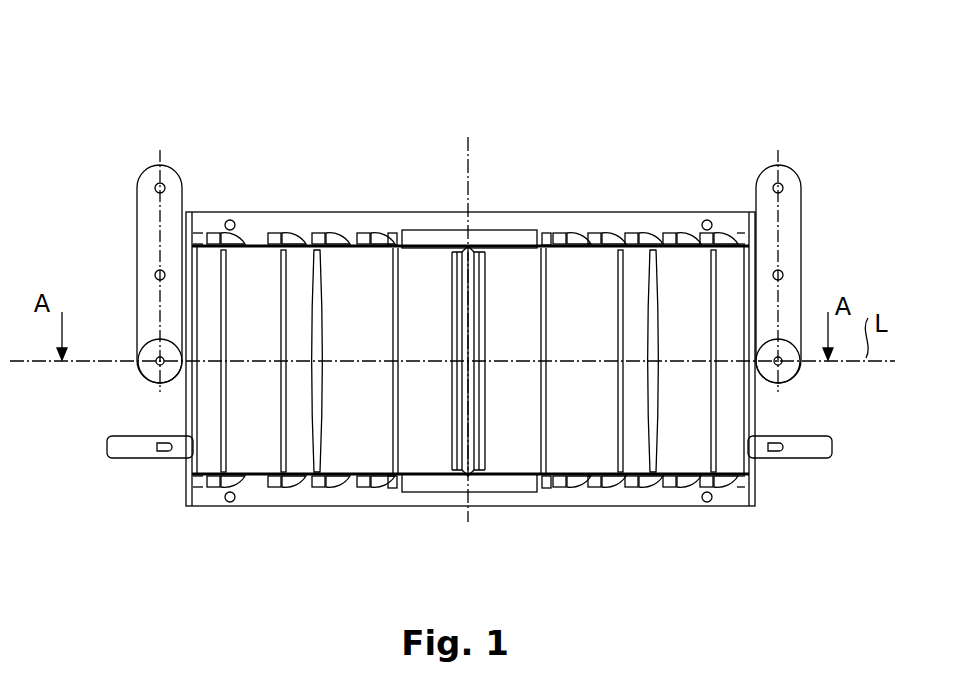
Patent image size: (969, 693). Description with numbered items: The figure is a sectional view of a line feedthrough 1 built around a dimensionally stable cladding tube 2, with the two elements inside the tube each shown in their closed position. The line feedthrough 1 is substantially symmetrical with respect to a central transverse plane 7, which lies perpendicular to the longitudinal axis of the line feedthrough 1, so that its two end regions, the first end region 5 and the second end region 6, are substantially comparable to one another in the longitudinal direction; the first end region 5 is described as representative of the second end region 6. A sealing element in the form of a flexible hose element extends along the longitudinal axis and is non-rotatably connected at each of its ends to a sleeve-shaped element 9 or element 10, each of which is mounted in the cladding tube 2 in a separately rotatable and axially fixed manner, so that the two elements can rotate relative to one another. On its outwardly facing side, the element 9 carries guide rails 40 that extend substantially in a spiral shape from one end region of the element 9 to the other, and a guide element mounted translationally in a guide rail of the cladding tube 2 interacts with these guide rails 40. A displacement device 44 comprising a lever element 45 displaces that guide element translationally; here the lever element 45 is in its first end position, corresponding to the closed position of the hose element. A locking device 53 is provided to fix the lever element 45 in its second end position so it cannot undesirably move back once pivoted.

The line feedthrough 1 is at (136, 113).
The cladding tube 2 is at (606, 218).
The first end region 5 is at (118, 400).
The second end region 6 is at (792, 404).
The central transverse plane 7 is at (470, 148).
The element 9 is at (350, 226).
The element 10 is at (658, 226).
The guide rail 40 is at (280, 232).
The displacement device 44 is at (105, 274).
The lever element 45 is at (147, 220).
The locking device 53 is at (135, 460).